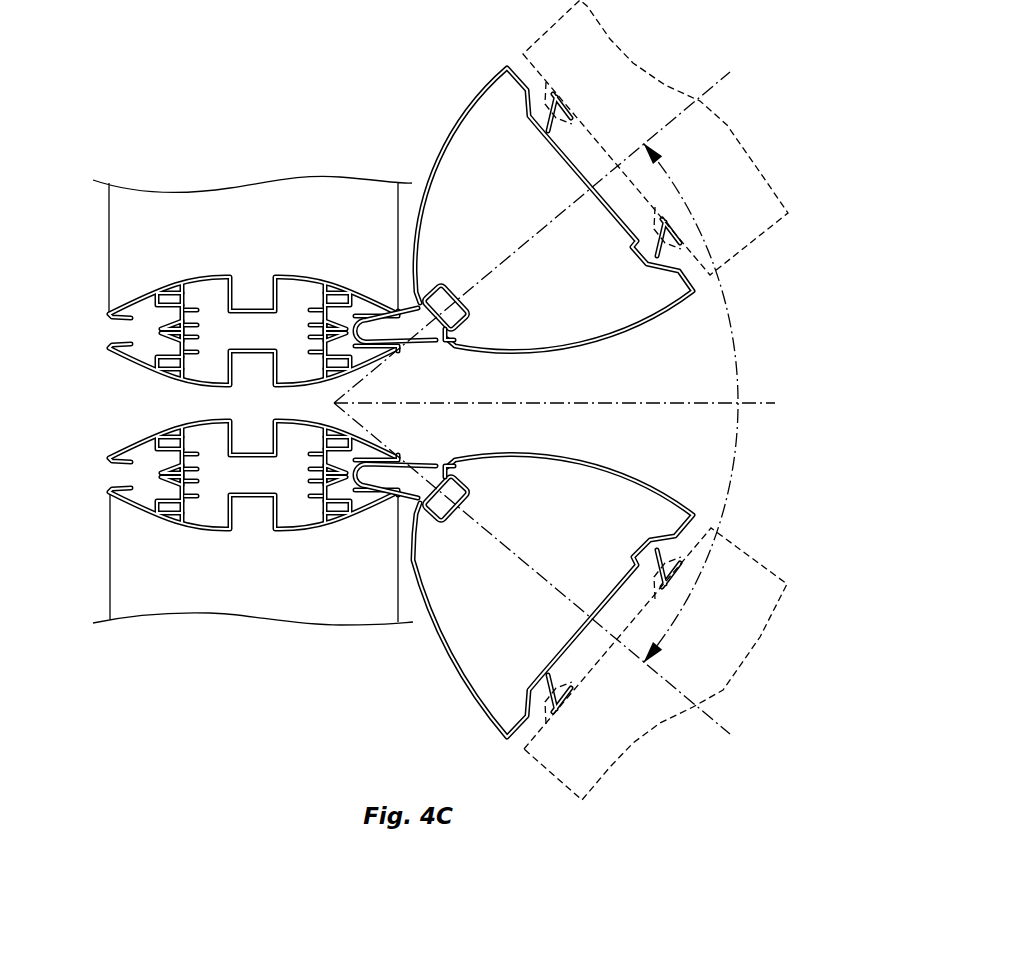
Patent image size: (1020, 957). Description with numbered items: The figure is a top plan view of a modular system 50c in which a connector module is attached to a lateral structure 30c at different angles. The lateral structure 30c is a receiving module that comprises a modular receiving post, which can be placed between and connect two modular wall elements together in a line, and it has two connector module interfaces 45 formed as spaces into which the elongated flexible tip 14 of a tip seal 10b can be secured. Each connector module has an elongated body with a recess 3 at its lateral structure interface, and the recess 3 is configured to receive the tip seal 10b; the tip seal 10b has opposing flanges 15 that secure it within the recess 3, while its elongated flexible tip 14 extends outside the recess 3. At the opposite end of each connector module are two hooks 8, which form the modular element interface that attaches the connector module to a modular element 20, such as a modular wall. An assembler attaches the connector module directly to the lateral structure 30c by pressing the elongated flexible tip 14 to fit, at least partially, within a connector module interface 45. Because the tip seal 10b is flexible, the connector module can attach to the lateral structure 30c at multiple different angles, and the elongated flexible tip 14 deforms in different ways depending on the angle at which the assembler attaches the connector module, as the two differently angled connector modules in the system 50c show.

The modular system 50c is at (431, 400).
The lateral structure 30c is at (162, 147).
The connector module interface 45 is at (333, 292).
The tip seal 10b is at (392, 298).
The elongated flexible tip 14 is at (413, 348).
The opposing flanges 15 is at (449, 347).
The recess 3 is at (473, 306).
The hooks 8 is at (566, 100).
The modular element 20 is at (764, 233).